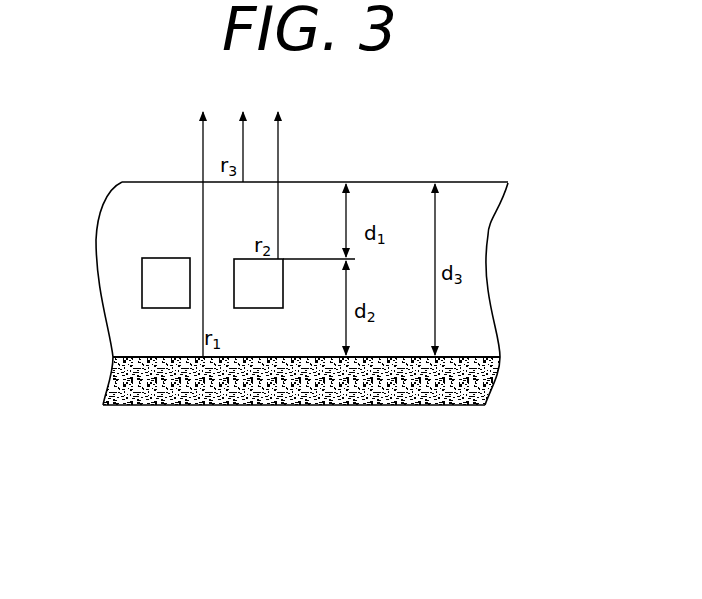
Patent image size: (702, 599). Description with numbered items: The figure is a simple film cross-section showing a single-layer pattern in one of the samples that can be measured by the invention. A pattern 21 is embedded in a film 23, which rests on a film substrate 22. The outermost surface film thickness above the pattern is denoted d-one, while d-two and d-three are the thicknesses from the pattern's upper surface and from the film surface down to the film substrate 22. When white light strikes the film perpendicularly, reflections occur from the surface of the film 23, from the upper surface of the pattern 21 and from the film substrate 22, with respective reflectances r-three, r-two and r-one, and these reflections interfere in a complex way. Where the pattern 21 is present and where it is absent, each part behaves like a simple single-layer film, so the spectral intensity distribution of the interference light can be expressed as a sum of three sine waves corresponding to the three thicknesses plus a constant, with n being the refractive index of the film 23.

The pattern 21 is at (142, 287).
The film substrate 22 is at (252, 382).
The film 23 is at (457, 227).